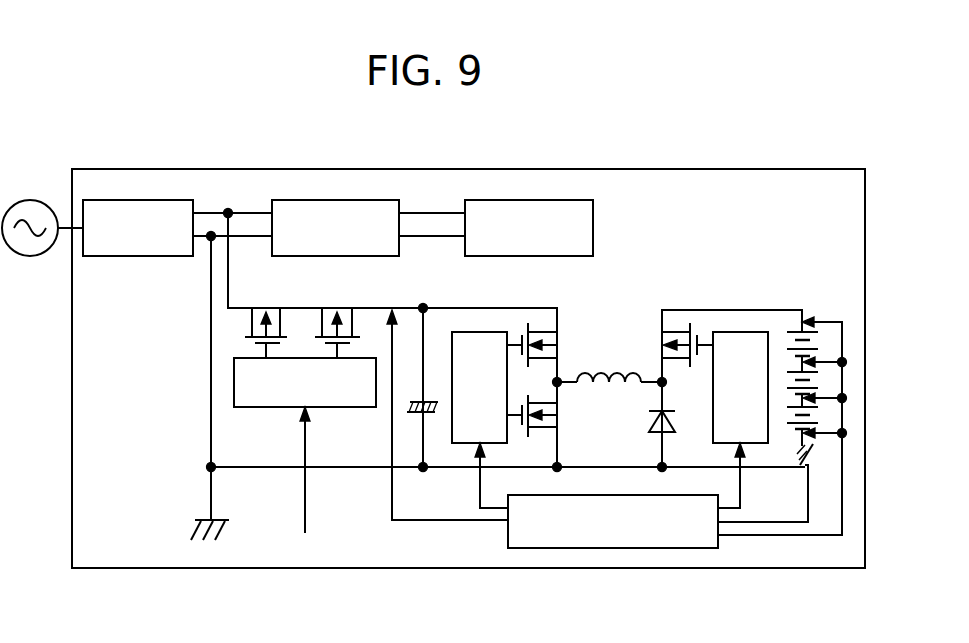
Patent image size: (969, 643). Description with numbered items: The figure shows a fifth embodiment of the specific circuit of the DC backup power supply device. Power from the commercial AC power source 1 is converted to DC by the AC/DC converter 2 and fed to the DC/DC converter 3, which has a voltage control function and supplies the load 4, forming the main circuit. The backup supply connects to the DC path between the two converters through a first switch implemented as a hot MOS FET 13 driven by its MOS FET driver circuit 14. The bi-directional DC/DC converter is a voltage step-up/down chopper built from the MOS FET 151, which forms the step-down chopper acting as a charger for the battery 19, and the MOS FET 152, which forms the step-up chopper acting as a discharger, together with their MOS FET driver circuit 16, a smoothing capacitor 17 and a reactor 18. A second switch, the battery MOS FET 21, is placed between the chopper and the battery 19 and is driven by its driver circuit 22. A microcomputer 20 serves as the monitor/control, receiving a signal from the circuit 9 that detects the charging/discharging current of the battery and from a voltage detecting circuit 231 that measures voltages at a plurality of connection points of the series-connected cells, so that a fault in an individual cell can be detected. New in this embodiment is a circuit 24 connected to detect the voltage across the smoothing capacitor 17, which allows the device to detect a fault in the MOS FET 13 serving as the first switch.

The commercial AC power source 1 is at (38, 200).
The AC/DC converter 2 is at (110, 200).
The DC/DC converter 3 is at (340, 200).
The load 4 is at (540, 200).
The circuit for detecting a charging/discharging current 9 is at (814, 457).
The MOS FET (hot MOS) 13 is at (347, 311).
The MOS FET driver circuit 14 is at (256, 408).
The MOS FET driver circuit 16 is at (475, 332).
The smoothing capacitor 17 is at (411, 414).
The reactor 18 is at (622, 367).
The battery 19 is at (815, 389).
The microcomputer 20 is at (675, 549).
The second switch (battery MOS FET) 21 is at (698, 328).
The driver circuit 22 is at (746, 332).
The circuit for detecting a voltage across the smoothing capacitor 24 is at (400, 310).
The MOS FET 151 is at (558, 343).
The MOS FET 152 is at (558, 415).
The voltage detecting circuit 231 is at (808, 320).